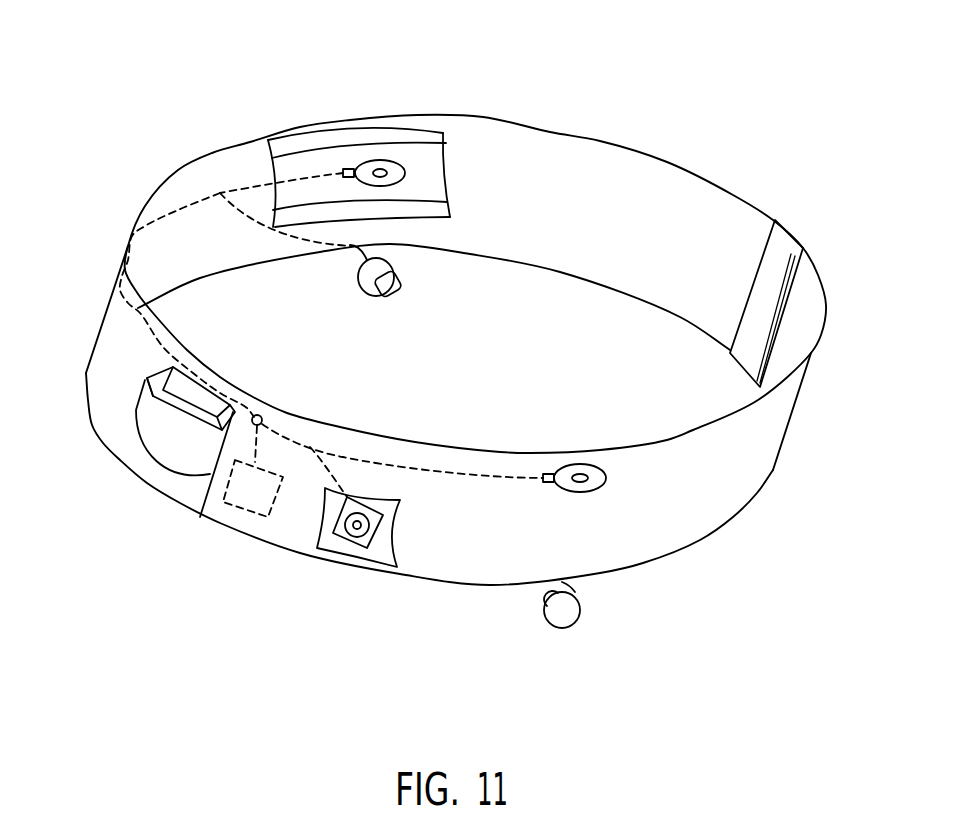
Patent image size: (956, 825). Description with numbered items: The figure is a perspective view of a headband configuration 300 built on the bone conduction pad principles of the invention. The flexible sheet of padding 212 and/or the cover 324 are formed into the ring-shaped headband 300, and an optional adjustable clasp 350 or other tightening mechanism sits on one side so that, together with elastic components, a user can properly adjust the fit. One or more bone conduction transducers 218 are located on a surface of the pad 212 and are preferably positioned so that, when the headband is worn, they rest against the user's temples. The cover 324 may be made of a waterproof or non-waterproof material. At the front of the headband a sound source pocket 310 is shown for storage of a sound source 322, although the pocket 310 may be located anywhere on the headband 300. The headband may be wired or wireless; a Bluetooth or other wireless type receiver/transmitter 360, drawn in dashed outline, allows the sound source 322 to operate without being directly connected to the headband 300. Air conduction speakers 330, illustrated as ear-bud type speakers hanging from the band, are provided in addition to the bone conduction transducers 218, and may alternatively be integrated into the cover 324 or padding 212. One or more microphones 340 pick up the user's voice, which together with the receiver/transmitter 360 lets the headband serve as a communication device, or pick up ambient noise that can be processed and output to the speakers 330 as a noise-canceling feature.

The headband configuration 300 is at (594, 76).
The flexible sheet of padding 212 is at (423, 157).
The bone conduction transducer 218 is at (365, 170).
The cover 324 is at (627, 170).
The adjustable clasp 350 is at (789, 235).
The air conduction speaker 330 is at (395, 267).
The sound source 322 is at (162, 400).
The sound source pocket 310 is at (188, 462).
The wireless type receiver/transmitter 360 is at (253, 512).
The microphone 340 is at (357, 537).